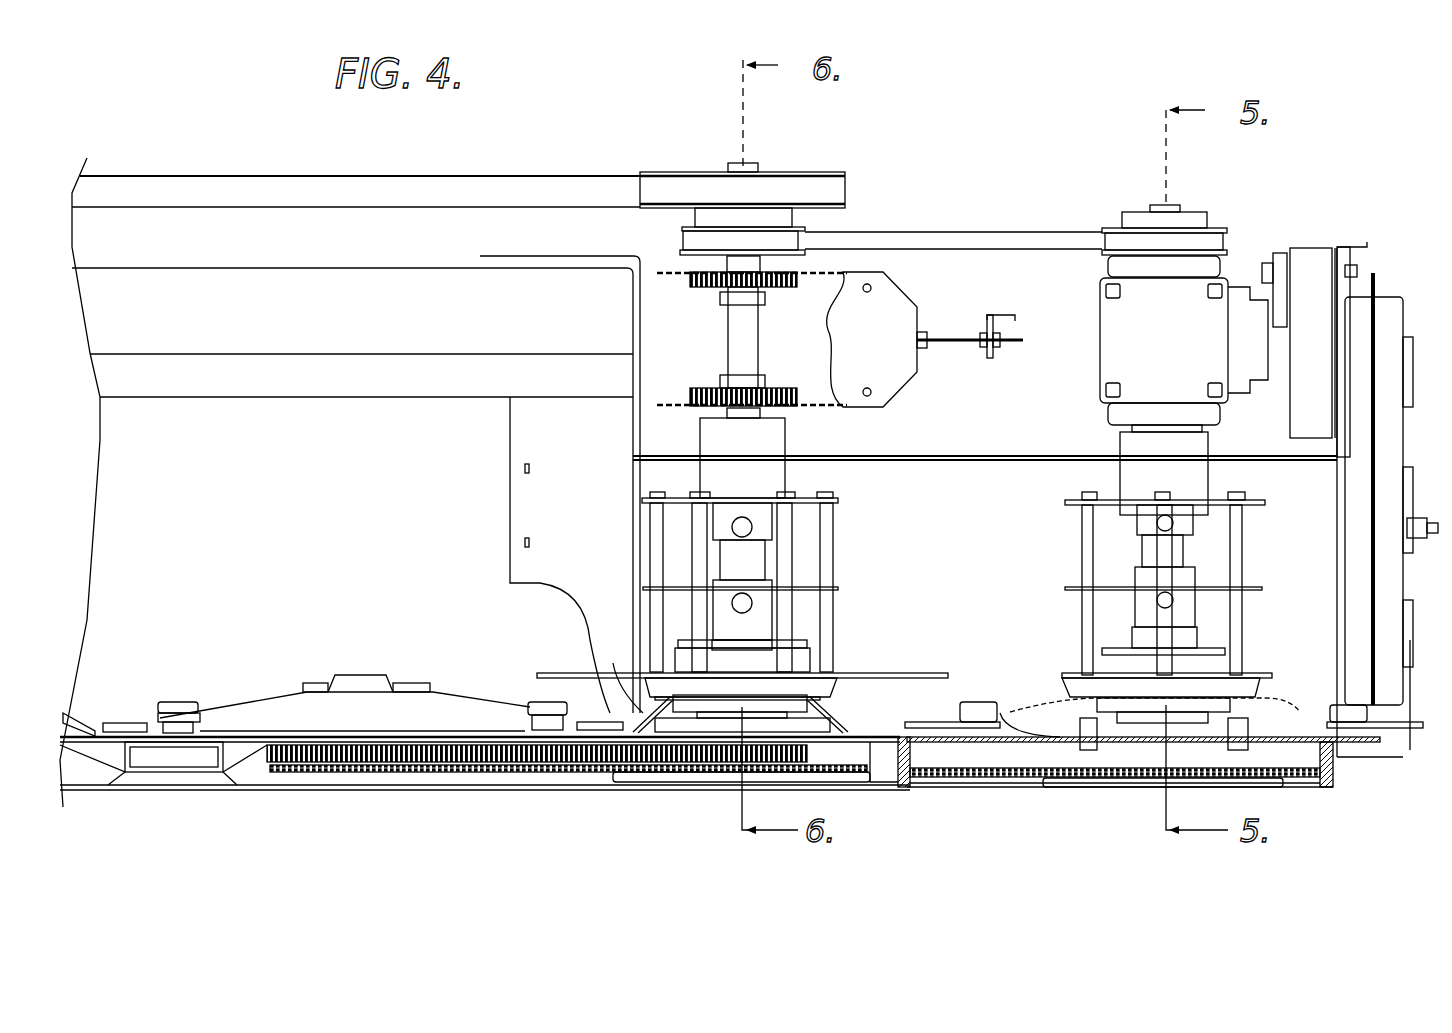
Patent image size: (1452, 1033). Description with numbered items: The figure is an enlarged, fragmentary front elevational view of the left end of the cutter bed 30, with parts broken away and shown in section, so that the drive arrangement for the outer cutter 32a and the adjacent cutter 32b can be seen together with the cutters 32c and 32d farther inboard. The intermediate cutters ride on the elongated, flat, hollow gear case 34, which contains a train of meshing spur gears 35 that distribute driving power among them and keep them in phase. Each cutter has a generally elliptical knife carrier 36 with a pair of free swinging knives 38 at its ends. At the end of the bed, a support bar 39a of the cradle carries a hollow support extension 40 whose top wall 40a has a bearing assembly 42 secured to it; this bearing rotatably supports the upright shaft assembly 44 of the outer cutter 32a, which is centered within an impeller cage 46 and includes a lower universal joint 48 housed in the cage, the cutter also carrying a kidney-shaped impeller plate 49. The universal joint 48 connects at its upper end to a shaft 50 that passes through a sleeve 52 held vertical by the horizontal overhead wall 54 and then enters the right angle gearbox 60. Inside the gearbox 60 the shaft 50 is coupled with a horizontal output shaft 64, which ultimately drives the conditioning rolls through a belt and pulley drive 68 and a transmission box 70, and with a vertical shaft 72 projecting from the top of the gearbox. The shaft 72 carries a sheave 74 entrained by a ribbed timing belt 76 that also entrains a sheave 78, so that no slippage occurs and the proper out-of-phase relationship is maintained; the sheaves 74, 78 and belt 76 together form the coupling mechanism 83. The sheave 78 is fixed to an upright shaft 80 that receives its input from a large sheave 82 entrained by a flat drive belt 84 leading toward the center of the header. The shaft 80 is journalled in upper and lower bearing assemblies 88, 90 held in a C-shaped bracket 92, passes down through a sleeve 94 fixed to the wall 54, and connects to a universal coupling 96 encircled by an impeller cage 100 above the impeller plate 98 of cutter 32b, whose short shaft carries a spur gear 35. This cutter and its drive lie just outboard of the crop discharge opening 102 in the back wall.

The cutter bed 30 is at (372, 797).
The rotary cutter 32a is at (1280, 700).
The rotary cutter 32b is at (840, 707).
The rotary cutter 32c is at (258, 705).
The rotary cutter 32d is at (78, 710).
The gear case 34 is at (882, 718).
The spur gears 35 is at (712, 835).
The knife carrier 36 is at (613, 663).
The knives 38 is at (943, 712).
The support bars 39a is at (905, 795).
The support extension 40 is at (985, 782).
The top wall 40a is at (1300, 770).
The bearing assembly 42 is at (1150, 742).
The shaft assembly 44 is at (1200, 547).
The impeller cage 46 is at (1058, 545).
The universal joint 48 is at (1185, 565).
The impeller plate 49 is at (1062, 655).
The shaft 50 is at (1115, 424).
The sleeve 52 is at (1200, 440).
The overhead wall 54 is at (922, 457).
The gearbox 60 is at (1100, 335).
The output shaft 64 is at (1275, 342).
The belt and pulley drive 68 is at (1313, 300).
The transmission box 70 is at (1395, 322).
The vertical shaft 72 is at (1170, 212).
The sheave 74 is at (1222, 230).
The drive belt 76 is at (915, 233).
The sheave 78 is at (690, 228).
The shaft 80 is at (742, 335).
The sheave 82 is at (780, 174).
The mechanism 83 is at (1016, 226).
The drive belt 84 is at (370, 178).
The bearing assembly 88 is at (772, 285).
The bearing assembly 90 is at (775, 395).
The bracket 92 is at (898, 305).
The sleeve 94 is at (780, 441).
The universal coupling 96 is at (760, 558).
The impeller plate 98 is at (565, 675).
The impeller cage 100 is at (852, 598).
The crop discharge opening 102 is at (291, 518).